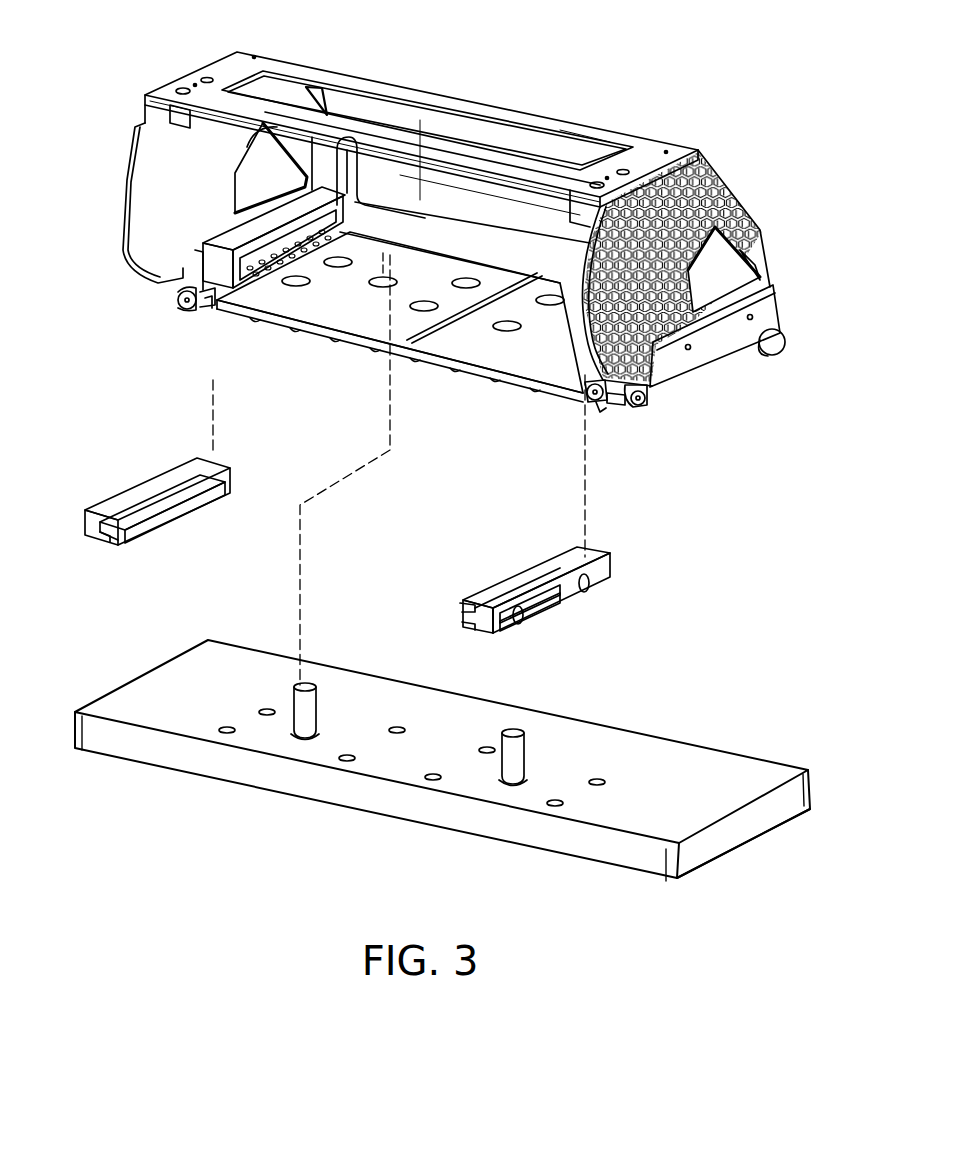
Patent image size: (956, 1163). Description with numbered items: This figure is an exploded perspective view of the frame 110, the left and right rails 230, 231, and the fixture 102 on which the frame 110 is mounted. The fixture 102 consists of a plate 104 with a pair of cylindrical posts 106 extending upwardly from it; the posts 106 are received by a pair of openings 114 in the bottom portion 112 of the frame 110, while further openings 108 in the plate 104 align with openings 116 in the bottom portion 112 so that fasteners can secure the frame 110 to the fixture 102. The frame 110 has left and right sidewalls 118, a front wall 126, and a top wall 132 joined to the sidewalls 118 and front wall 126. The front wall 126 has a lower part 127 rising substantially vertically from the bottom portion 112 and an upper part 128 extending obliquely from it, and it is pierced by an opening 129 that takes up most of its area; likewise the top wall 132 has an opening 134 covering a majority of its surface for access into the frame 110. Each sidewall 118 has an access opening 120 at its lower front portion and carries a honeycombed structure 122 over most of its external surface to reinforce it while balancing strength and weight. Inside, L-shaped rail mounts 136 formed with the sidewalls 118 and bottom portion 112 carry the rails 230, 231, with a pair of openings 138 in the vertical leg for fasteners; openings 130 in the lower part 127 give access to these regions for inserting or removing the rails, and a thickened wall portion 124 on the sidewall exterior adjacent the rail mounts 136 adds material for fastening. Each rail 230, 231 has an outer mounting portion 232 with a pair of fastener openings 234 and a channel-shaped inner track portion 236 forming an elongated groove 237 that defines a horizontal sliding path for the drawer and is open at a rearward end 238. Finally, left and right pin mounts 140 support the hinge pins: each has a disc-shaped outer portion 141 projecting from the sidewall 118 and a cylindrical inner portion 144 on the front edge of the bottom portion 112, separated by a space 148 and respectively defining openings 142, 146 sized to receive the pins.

The fixture 102 is at (760, 745).
The plate 104 is at (780, 820).
The cylindrical posts 106 is at (515, 730).
The openings 108 is at (600, 775).
The frame 110 is at (215, 57).
The bottom portion 112 is at (328, 318).
The openings 114 is at (383, 290).
The openings 116 is at (415, 312).
The sidewalls 118 is at (125, 155).
The access opening 120 is at (275, 165).
The honeycombed structure 122 is at (715, 165).
The thickened wall portion 124 is at (773, 295).
The front wall 126 is at (443, 220).
The lower part 127 is at (735, 245).
The upper part 128 is at (318, 100).
The opening 129 is at (383, 223).
The openings 130 is at (347, 193).
The top wall 132 is at (645, 148).
The opening 134 is at (575, 137).
The rail mounts 136 is at (200, 262).
The openings 138 is at (225, 237).
The pin mounts 140 is at (175, 312).
The outer portion 141 is at (176, 300).
The opening 142 is at (202, 312).
The inner portion 144 is at (220, 315).
The opening 146 is at (612, 412).
The space 148 is at (212, 330).
The left rail 230 is at (85, 517).
The right rail 231 is at (483, 635).
The outer mounting portion 232 is at (490, 630).
The openings 234 is at (595, 590).
The inner track portion 236 is at (205, 495).
The groove 237 is at (160, 510).
The rearward end 238 is at (110, 540).